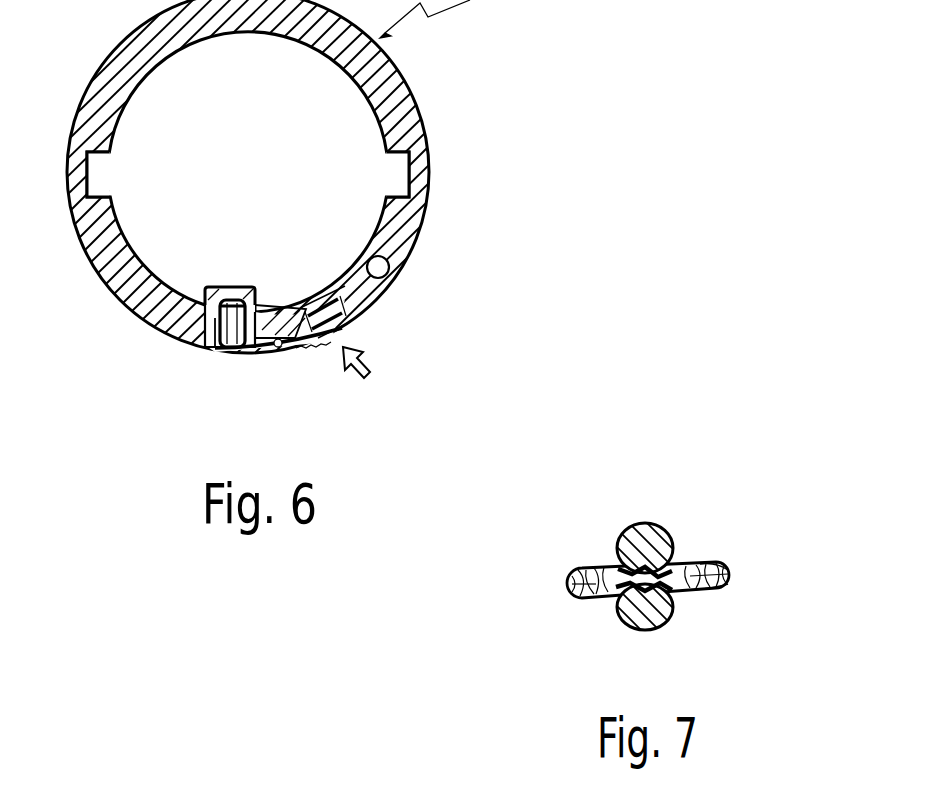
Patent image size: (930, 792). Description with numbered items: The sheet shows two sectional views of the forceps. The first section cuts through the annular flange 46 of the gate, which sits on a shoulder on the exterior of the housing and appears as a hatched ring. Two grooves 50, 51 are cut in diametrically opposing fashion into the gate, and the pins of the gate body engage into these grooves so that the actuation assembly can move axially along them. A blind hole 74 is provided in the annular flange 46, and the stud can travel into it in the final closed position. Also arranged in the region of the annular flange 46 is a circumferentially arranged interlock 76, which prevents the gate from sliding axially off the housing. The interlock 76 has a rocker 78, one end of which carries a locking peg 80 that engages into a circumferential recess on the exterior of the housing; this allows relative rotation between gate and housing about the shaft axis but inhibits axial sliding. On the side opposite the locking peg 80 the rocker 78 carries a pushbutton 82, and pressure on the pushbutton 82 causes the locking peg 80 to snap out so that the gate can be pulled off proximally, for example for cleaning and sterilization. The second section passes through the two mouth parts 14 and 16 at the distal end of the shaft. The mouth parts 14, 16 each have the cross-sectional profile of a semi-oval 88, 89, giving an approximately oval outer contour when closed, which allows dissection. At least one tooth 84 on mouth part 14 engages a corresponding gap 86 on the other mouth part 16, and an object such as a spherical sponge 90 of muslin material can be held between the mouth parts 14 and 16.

In FIG. 6, the annular flange 46 is at (420, 115).
In FIG. 6, the groove 50 is at (97, 175).
In FIG. 6, the groove 51 is at (395, 180).
In FIG. 6, the blind hole 74 is at (384, 268).
In FIG. 6, the interlock 76 is at (245, 360).
In FIG. 6, the rocker 78 is at (295, 356).
In FIG. 6, the locking peg 80 is at (233, 305).
In FIG. 6, the pushbutton 82 is at (340, 335).
In FIG. 7, the mouth part 14 is at (645, 540).
In FIG. 7, the mouth part 16 is at (627, 617).
In FIG. 7, the tooth 84 is at (665, 547).
In FIG. 7, the gap 86 is at (673, 605).
In FIG. 7, the semi-oval 88 is at (625, 545).
In FIG. 7, the semi-oval 89 is at (675, 602).
In FIG. 7, the spherical sponge 90 is at (715, 566).